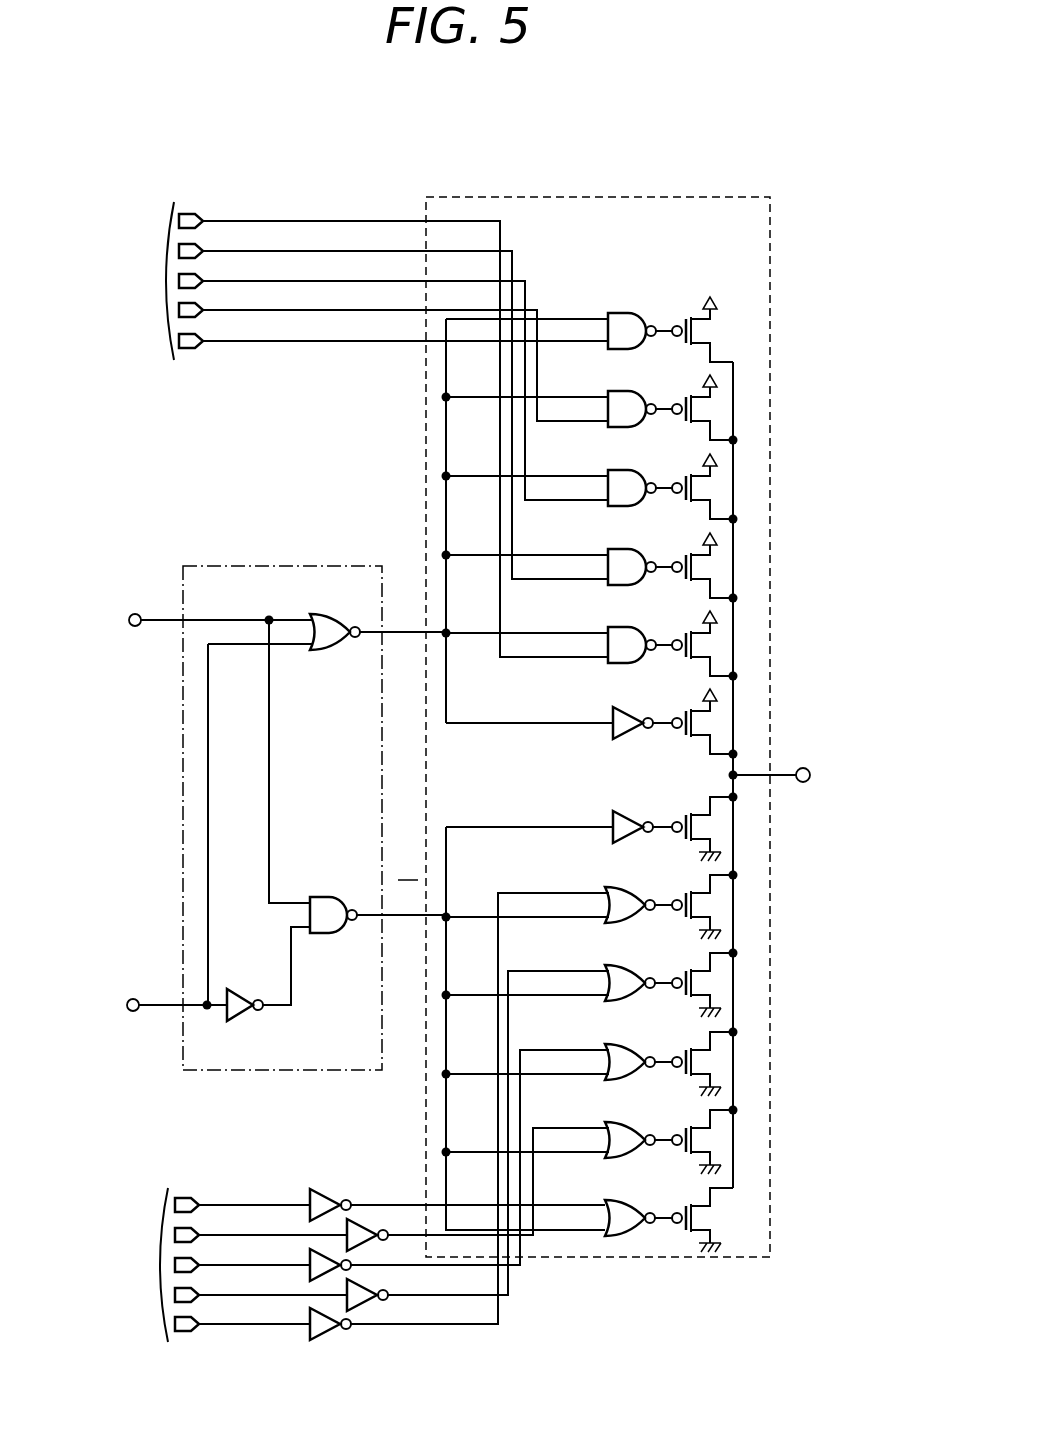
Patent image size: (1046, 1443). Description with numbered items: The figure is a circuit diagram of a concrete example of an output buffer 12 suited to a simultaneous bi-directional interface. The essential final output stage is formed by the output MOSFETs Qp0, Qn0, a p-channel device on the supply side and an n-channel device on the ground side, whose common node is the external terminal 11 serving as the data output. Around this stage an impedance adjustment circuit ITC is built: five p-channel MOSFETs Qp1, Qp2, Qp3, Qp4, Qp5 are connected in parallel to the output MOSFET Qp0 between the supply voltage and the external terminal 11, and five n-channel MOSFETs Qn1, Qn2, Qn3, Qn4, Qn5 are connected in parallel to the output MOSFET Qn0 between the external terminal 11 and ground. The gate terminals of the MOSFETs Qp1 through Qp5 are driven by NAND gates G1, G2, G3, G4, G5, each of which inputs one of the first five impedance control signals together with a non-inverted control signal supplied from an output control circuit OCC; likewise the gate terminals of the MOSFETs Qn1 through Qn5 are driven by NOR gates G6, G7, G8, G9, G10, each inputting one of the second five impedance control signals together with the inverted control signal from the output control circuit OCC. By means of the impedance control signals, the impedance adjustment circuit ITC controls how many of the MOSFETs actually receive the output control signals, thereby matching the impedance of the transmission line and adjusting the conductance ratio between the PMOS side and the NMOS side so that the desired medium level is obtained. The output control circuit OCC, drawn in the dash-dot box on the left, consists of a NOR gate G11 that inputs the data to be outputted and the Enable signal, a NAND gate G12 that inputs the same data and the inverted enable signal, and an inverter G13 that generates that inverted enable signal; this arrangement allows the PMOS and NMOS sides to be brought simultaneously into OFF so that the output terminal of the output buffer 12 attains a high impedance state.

The output buffer 12 is at (416, 128).
The external terminal 11 is at (803, 783).
The impedance adjustment circuit ITC is at (600, 196).
The output control circuit OCC is at (338, 1072).
The NAND gate G1 is at (623, 312).
The NAND gate G2 is at (623, 390).
The NAND gate G3 is at (623, 469).
The NAND gate G4 is at (623, 548).
The NAND gate G5 is at (623, 626).
The NOR gate G6 is at (623, 886).
The NOR gate G7 is at (623, 964).
The NOR gate G8 is at (623, 1043).
The NOR gate G9 is at (623, 1121).
The NOR gate G10 is at (623, 1199).
The NOR gate G11 is at (332, 653).
The NAND gate G12 is at (327, 895).
The inverter G13 is at (243, 1018).
The output MOSFET Qp0 is at (673, 718).
The p-channel MOSFET Qp1 is at (693, 327).
The p-channel MOSFET Qp2 is at (693, 405).
The p-channel MOSFET Qp3 is at (693, 484).
The p-channel MOSFET Qp4 is at (693, 563).
The p-channel MOSFET Qp5 is at (693, 641).
The output MOSFET Qn0 is at (673, 824).
The n-channel MOSFET Qn1 is at (693, 904).
The n-channel MOSFET Qn2 is at (693, 982).
The n-channel MOSFET Qn3 is at (693, 1061).
The n-channel MOSFET Qn4 is at (693, 1139).
The n-channel MOSFET Qn5 is at (693, 1217).